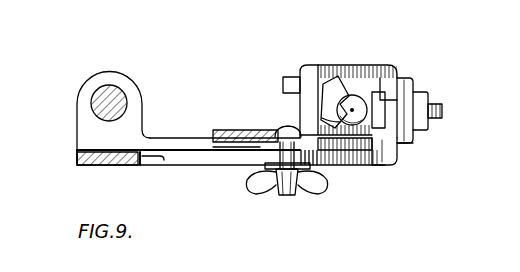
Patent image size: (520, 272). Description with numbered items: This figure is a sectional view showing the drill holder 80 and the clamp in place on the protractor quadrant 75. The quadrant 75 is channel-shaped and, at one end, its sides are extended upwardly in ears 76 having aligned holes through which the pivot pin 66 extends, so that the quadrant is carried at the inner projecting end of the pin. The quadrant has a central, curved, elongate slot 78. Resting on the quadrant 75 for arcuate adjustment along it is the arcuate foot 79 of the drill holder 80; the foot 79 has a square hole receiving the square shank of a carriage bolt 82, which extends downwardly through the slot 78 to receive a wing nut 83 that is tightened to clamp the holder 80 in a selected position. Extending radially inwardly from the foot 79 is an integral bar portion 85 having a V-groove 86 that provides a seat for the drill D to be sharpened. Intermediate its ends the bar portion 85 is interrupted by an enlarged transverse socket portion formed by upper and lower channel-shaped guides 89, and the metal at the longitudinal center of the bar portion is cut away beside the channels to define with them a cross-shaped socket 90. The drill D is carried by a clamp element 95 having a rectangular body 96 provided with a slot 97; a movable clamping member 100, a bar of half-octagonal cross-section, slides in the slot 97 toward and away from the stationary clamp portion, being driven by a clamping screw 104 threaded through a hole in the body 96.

The pivot pin 66 is at (106, 90).
The protractor quadrant 75 is at (186, 138).
The ears 76 is at (90, 80).
The curved elongate slot 78 is at (152, 163).
The arcuate foot 79 is at (232, 130).
The drill holder 80 is at (305, 62).
The carriage bolt 82 is at (280, 158).
The wing nut 83 is at (258, 186).
The bar portion 85 is at (326, 98).
The V-groove 86 is at (336, 120).
The channel-shaped guides 89 is at (388, 82).
The cross-shaped socket 90 is at (354, 106).
The clamp element 95 is at (413, 143).
The rectangular body 96 is at (402, 90).
The slot 97 is at (372, 138).
The movable clamping member 100 is at (418, 98).
The clamping screw 104 is at (442, 111).
The drill D is at (358, 100).